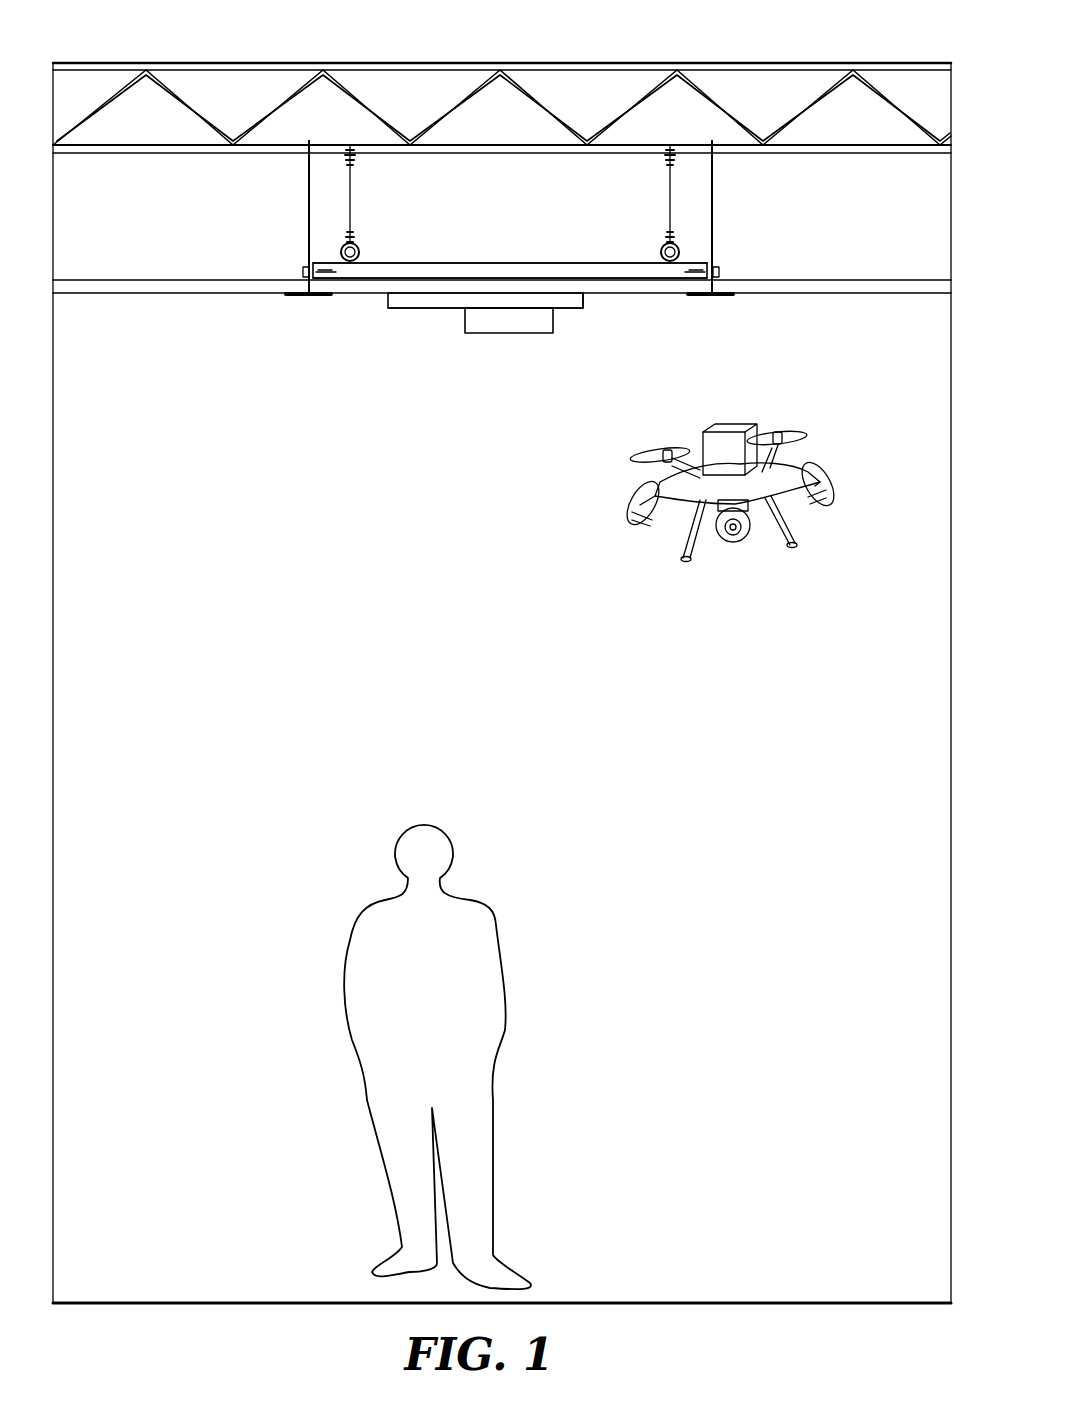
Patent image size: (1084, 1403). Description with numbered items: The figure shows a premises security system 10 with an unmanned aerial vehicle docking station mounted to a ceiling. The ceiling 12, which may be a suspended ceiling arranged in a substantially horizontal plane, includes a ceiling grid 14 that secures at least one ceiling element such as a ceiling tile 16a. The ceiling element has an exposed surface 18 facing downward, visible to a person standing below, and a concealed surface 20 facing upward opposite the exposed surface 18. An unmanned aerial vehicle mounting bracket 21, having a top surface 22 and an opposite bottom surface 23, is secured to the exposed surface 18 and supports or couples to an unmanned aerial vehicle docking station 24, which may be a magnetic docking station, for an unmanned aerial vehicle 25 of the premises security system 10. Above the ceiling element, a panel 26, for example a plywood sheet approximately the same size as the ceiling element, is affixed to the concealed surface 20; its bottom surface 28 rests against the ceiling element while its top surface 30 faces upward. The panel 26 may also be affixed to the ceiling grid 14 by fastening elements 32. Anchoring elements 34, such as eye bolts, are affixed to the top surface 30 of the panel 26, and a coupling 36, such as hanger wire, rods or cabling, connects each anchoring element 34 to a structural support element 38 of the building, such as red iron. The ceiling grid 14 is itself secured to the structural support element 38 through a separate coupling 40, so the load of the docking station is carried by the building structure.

The premises security system 10 is at (755, 50).
The ceiling 12 is at (905, 296).
The ceiling grid 14 is at (307, 252).
The ceiling panel 16a is at (668, 296).
The exposed surface 18 is at (638, 296).
The concealed surface 20 is at (480, 276).
The unmanned aerial vehicle mounting bracket 21 is at (430, 310).
The top surface 22 is at (372, 296).
The bottom surface 23 is at (568, 310).
The unmanned aerial vehicle docking station 24 is at (505, 334).
The unmanned aerial vehicle 25 is at (648, 526).
The panel 26 is at (541, 270).
The bottom surface 28 is at (355, 296).
The top surface 30 is at (523, 264).
The fastening elements 32 is at (300, 272).
The anchoring elements 34 is at (360, 250).
The coupling 36 is at (352, 208).
The structural support element 38 is at (360, 150).
The coupling 40 is at (307, 203).